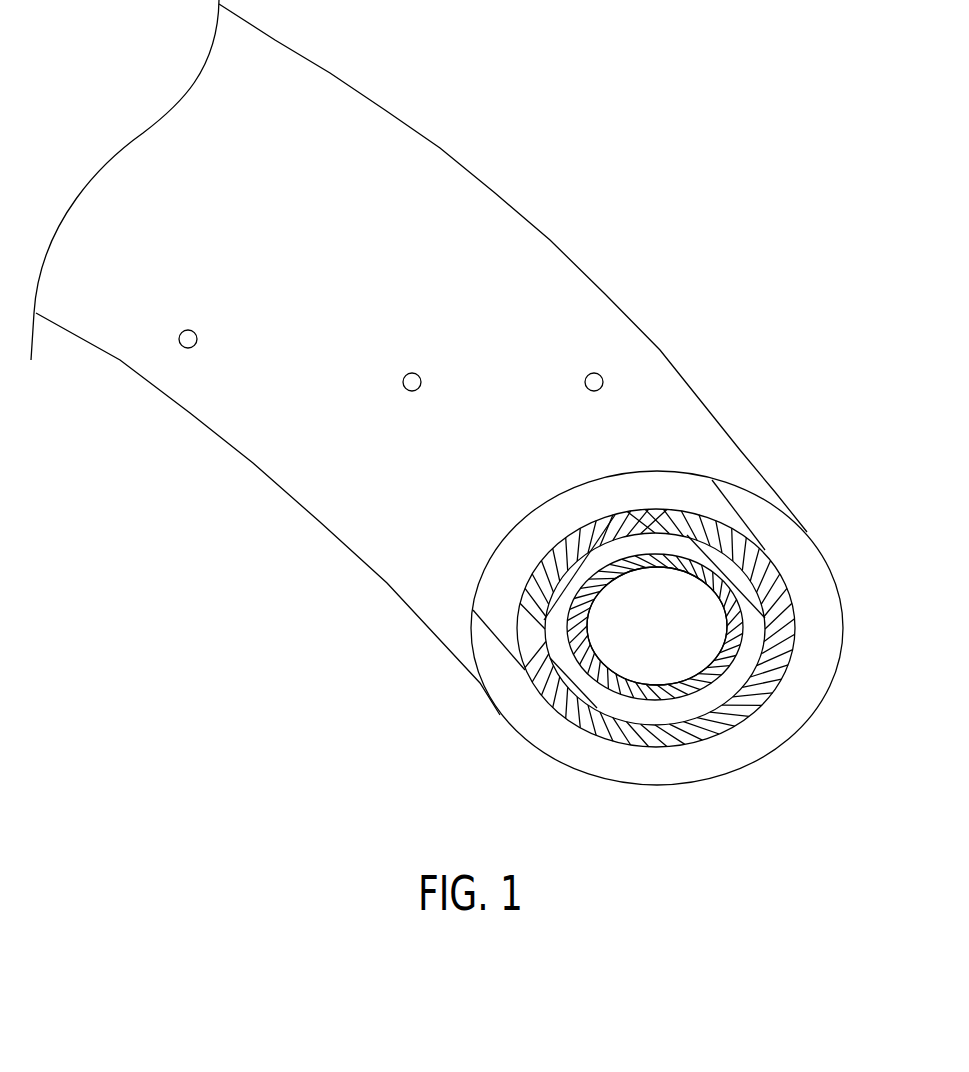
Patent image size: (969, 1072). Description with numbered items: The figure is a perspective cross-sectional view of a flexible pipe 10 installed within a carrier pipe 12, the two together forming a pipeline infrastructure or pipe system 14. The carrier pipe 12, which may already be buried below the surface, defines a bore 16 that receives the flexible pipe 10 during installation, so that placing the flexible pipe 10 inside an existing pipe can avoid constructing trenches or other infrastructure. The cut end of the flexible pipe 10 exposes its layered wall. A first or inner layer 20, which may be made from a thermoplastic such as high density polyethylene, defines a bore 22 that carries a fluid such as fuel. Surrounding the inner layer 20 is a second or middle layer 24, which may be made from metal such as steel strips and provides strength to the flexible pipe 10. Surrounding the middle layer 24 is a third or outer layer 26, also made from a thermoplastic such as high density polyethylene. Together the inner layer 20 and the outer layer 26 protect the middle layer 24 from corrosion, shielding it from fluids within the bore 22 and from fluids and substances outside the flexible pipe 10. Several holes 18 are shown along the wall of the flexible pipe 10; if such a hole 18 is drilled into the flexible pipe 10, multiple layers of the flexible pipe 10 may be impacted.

The flexible pipe 10 is at (548, 722).
The carrier pipe 12 is at (248, 478).
The pipe system 14 is at (832, 486).
The bore 16 is at (672, 765).
The hole 18 is at (186, 330).
The inner layer 20 is at (713, 677).
The bore 22 is at (668, 644).
The middle layer 24 is at (750, 655).
The outer layer 26 is at (640, 735).